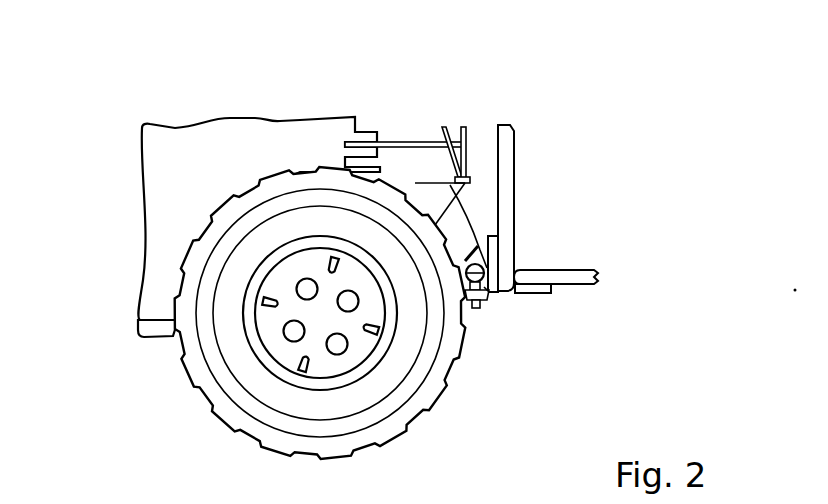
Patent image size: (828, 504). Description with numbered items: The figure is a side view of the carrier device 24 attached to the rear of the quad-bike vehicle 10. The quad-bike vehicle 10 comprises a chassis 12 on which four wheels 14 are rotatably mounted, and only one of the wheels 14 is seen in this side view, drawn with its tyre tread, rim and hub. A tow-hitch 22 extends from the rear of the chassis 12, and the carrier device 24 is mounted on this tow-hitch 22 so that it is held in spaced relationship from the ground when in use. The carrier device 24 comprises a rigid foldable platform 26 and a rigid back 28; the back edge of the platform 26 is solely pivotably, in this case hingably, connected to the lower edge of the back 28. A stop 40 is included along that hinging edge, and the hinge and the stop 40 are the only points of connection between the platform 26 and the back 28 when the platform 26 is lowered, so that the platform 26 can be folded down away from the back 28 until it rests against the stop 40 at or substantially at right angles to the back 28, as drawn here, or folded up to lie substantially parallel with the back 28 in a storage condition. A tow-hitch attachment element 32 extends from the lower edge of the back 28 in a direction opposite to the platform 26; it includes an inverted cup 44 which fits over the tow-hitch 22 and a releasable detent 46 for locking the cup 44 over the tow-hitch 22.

The quad-bike vehicle 10 is at (307, 100).
The chassis 12 is at (153, 337).
The wheels 14 is at (240, 434).
The tow-hitch 22 is at (478, 307).
The carrier device 24 is at (601, 206).
The rigid foldable platform 26 is at (580, 268).
The rigid back 28 is at (515, 167).
The tow-hitch attachment element 32 is at (483, 290).
The stop 40 is at (537, 296).
The inverted cup 44 is at (492, 240).
The releasable detent 46 is at (453, 214).